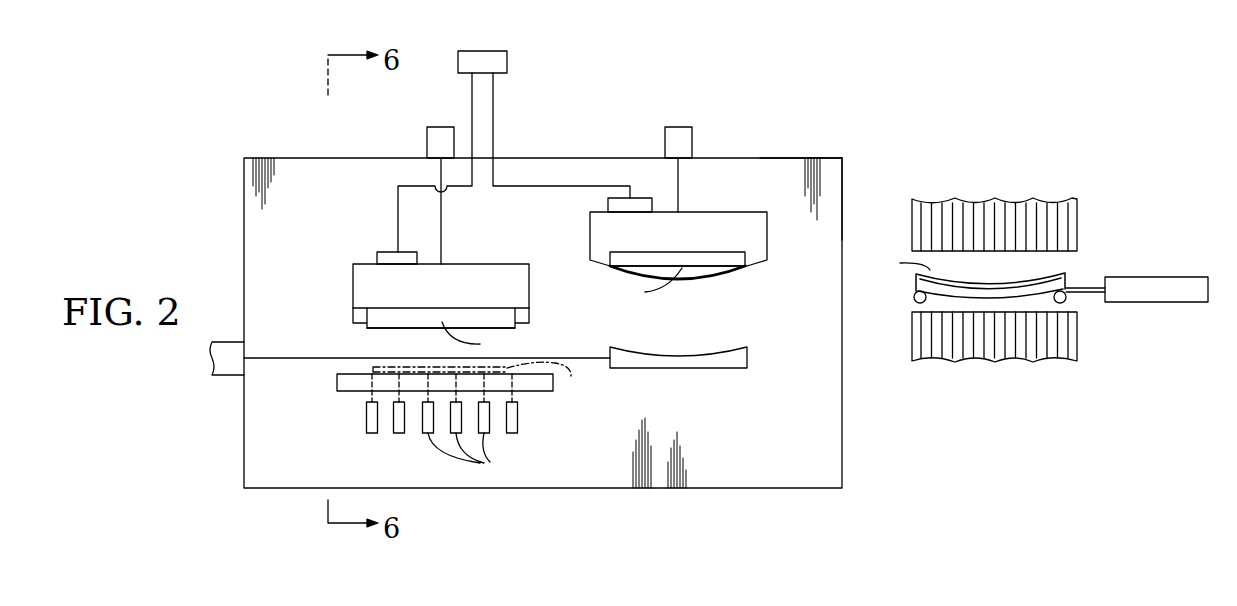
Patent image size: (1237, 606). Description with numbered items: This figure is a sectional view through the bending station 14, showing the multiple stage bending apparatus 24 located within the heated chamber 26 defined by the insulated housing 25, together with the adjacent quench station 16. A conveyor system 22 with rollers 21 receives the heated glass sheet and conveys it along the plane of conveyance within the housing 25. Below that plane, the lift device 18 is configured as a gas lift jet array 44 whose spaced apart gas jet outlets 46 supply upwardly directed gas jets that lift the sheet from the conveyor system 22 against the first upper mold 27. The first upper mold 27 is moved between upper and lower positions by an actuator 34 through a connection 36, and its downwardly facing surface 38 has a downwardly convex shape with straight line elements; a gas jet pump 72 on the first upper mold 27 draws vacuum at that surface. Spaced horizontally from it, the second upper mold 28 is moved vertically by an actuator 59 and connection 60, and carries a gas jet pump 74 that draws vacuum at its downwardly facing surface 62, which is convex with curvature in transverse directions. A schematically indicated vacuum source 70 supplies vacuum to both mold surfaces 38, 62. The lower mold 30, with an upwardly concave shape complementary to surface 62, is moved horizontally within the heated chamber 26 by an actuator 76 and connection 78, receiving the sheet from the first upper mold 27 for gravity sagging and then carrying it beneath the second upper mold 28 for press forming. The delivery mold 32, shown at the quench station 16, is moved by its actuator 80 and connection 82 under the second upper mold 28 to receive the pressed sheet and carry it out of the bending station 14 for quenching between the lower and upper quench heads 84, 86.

The bending station 14 is at (345, 133).
The bending apparatus 24 is at (307, 172).
The insulated housing 25 is at (785, 158).
The heated chamber 26 is at (830, 202).
The actuator 76 is at (230, 378).
The connection 78 is at (265, 357).
The vacuum source 70 is at (507, 62).
The actuator 34 is at (440, 127).
The connection 36 is at (440, 172).
The gas jet pump 72 is at (395, 252).
The first upper mold 27 is at (353, 285).
The downwardly facing surface 38 is at (356, 332).
The actuator 59 is at (692, 145).
The connection 60 is at (678, 190).
The gas jet pump 74 is at (640, 197).
The second upper mold 28 is at (586, 236).
The downwardly facing surface 62 is at (758, 272).
The lower mold 30 is at (677, 368).
The conveyor system 22 is at (540, 402).
The rollers 21 is at (345, 385).
The lift device 18 is at (356, 417).
The gas lift jet array 44 is at (470, 417).
The gas jet outlets 46 is at (464, 461).
The quench station 16 is at (1060, 170).
The upper quench head 86 is at (1080, 225).
The lower quench head 84 is at (1080, 348).
The delivery mold 32 is at (1078, 300).
The connection 82 is at (1085, 288).
The actuator 80 is at (1155, 277).